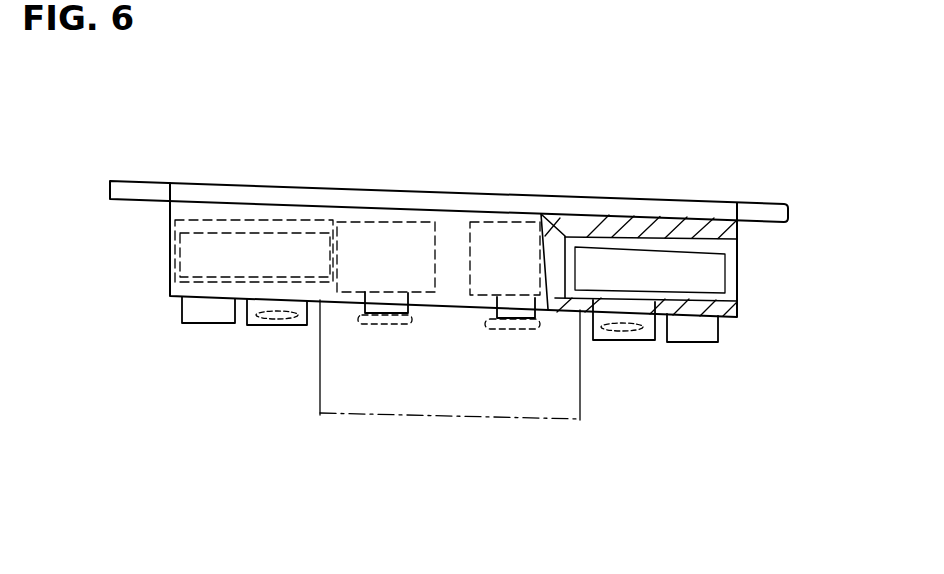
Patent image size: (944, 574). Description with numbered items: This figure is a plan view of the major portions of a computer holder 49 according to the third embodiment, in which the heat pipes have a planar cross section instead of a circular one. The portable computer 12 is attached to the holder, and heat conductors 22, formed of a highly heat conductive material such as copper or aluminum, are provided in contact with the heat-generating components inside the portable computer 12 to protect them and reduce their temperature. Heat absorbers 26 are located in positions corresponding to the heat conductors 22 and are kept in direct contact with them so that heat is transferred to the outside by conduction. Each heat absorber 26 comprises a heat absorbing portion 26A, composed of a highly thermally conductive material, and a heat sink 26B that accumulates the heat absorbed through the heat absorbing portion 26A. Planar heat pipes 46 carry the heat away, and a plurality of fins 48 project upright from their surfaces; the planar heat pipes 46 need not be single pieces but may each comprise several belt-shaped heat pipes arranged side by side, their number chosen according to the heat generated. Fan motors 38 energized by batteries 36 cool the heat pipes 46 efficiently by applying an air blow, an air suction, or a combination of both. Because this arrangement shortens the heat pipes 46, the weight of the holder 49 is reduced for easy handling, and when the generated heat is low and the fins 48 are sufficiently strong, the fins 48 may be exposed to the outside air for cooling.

The portable computer 12 is at (457, 402).
The heat conductor 22 is at (380, 323).
The heat absorber 26 is at (352, 312).
The heat absorbing portion 26A is at (395, 305).
The heat sink 26B is at (362, 222).
The battery 36 is at (207, 313).
The fan motor 38 is at (280, 320).
The planar heat pipe 46 is at (237, 222).
The fin 48 is at (172, 265).
The holder 49 is at (776, 211).